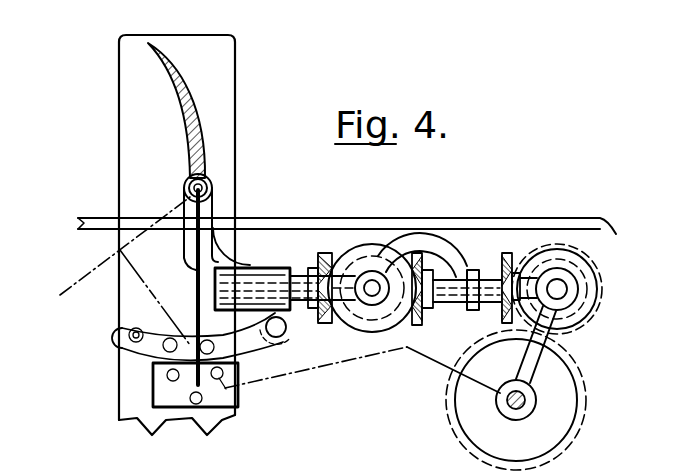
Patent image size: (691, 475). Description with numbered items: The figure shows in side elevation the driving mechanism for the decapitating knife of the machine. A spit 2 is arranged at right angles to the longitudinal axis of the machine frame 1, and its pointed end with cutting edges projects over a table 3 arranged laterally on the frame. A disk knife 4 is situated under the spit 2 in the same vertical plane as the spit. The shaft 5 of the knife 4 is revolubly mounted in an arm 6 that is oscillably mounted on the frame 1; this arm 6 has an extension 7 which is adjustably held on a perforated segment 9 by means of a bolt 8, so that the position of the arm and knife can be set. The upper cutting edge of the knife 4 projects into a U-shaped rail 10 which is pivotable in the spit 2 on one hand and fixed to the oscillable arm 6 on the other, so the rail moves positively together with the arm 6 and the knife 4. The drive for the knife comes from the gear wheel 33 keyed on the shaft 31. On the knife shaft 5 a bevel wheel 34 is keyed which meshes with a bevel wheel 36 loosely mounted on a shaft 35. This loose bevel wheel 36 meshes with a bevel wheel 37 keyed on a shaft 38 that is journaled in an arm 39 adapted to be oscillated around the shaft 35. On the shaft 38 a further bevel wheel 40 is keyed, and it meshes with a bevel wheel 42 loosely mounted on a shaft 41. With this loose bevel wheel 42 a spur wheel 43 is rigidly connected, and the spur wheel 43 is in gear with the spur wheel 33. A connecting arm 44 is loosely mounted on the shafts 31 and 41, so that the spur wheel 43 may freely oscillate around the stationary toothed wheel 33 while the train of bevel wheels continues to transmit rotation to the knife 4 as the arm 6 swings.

The machine frame 1 is at (126, 290).
The spit 2 is at (189, 122).
The table 3 is at (346, 218).
The disk knife 4 is at (112, 262).
The knife shaft 5 is at (258, 286).
The arm 6 is at (240, 272).
The extension 7 is at (238, 318).
The bolt 8 is at (283, 336).
The perforated segment 9 is at (148, 352).
The U-shaped rail 10 is at (206, 200).
The shaft 31 is at (518, 410).
The gear wheel 33 is at (576, 402).
The bevel wheel 34 is at (324, 262).
The shaft 35 is at (368, 292).
The bevel wheel 36 is at (380, 350).
The bevel wheel 37 is at (426, 326).
The shaft 38 is at (472, 270).
The arm 39 is at (440, 249).
The bevel wheel 40 is at (507, 255).
The shaft 41 is at (567, 289).
The bevel wheel 42 is at (585, 261).
The spur wheel 43 is at (601, 274).
The connecting arm 44 is at (524, 358).